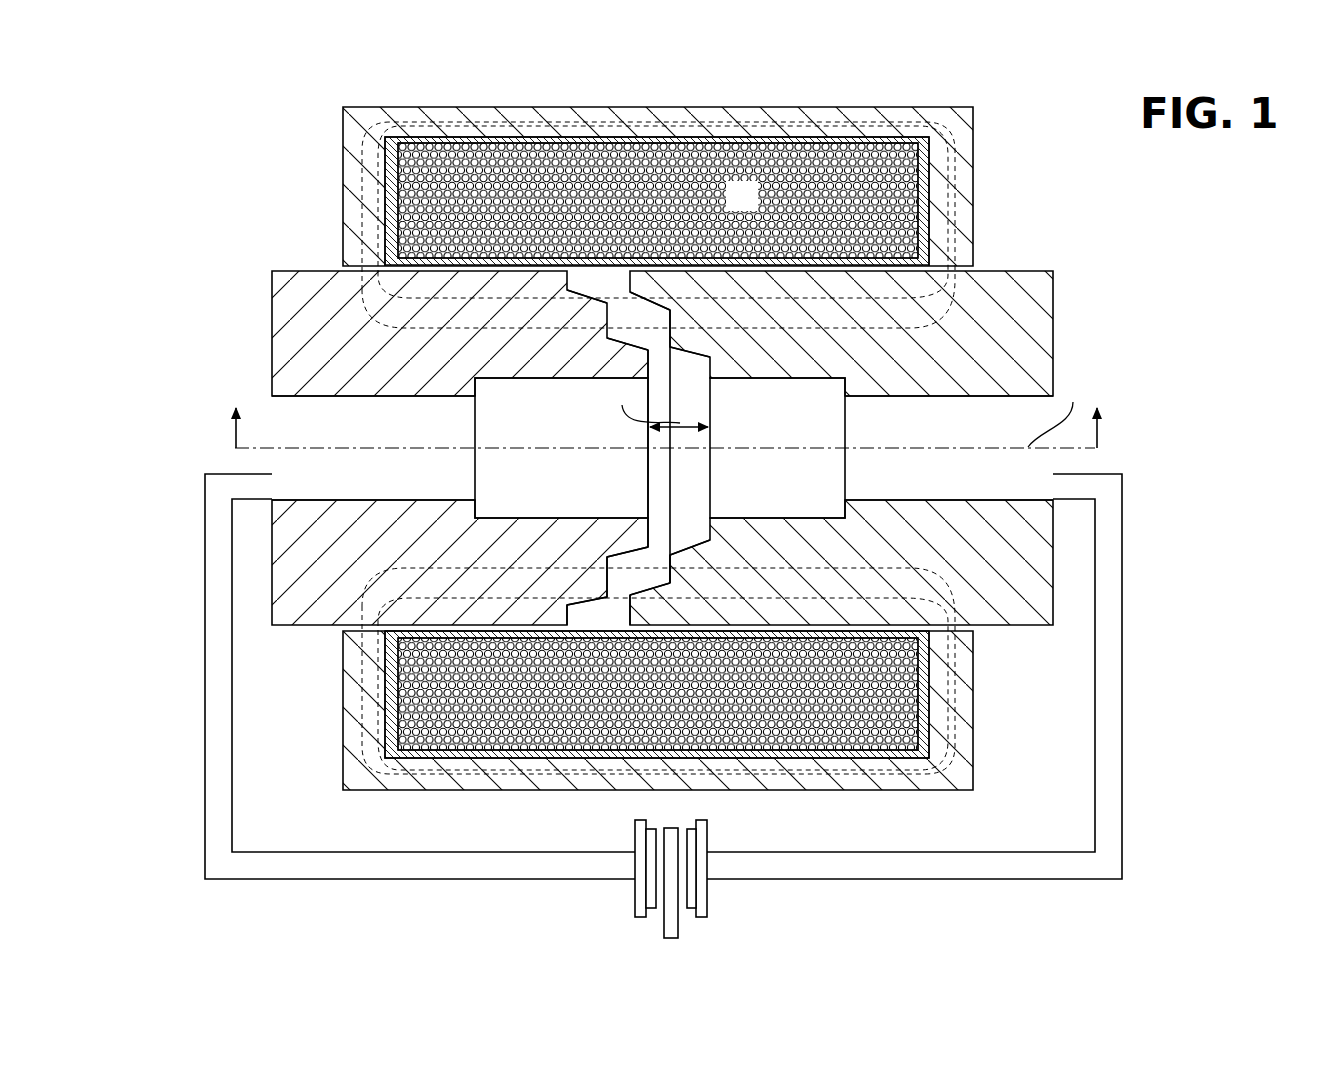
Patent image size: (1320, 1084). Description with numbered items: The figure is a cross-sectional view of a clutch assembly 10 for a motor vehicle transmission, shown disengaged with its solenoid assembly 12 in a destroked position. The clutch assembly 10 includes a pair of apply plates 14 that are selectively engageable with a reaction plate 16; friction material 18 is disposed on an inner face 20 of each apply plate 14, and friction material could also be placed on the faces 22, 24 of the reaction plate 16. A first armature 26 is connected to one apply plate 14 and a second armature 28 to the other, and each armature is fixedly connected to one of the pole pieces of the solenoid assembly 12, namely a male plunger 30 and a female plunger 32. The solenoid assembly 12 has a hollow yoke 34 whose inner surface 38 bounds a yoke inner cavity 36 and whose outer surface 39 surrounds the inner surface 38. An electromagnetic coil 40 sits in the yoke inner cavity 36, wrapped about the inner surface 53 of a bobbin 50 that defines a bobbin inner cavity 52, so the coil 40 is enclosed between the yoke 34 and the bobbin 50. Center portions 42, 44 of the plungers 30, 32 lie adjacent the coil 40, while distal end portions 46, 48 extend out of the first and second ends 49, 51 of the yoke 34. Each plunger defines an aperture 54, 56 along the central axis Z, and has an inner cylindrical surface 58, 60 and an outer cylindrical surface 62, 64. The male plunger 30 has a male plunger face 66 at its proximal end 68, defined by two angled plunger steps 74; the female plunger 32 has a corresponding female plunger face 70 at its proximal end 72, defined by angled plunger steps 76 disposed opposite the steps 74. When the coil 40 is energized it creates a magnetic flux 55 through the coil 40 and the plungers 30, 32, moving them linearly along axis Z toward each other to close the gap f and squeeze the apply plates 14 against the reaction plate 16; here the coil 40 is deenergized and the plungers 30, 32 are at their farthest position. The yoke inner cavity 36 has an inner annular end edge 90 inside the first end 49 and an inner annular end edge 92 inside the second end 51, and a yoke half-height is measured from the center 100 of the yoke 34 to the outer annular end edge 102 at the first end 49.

The clutch assembly 10 is at (243, 193).
The solenoid assembly 12 is at (698, 170).
The apply plates 14 is at (636, 840).
The reaction plate 16 is at (673, 873).
The friction material 18 is at (650, 897).
The inner face 20 is at (673, 867).
The face 22 is at (665, 880).
The face 24 is at (664, 880).
The first armature 26 is at (372, 873).
The second armature 28 is at (990, 873).
The male plunger 30 is at (270, 345).
The female plunger 32 is at (889, 333).
The yoke 34 is at (702, 170).
The yoke inner cavity 36 is at (850, 138).
The inner cylindrical or cubical surface 38 is at (642, 726).
The outer cylindrical or cubical surface 39 is at (648, 736).
The electromagnetic coil 40 is at (658, 456).
The center portion 42 is at (418, 303).
The center portion 44 is at (773, 365).
The distal end portion 46 is at (418, 303).
The distal end portion 48 is at (889, 296).
The first end 49 is at (670, 736).
The bobbin 50 is at (388, 165).
The second end 51 is at (700, 736).
The inner cavity 52 is at (658, 456).
The inner surface 53 is at (560, 257).
The aperture 54 is at (285, 405).
The magnetic flux 55 is at (850, 782).
The aperture 56 is at (993, 400).
The inner cylindrical surface 58 is at (393, 490).
The inner cylindrical surface 60 is at (880, 487).
The outer cylindrical surface 62 is at (418, 303).
The outer cylindrical surface 64 is at (889, 296).
The male plunger face 66 is at (608, 570).
The proximal end 68 is at (588, 618).
The female plunger face 70 is at (640, 537).
The proximal end 72 is at (640, 627).
The angled plunger steps 74 is at (640, 347).
The angled plunger steps 76 is at (685, 338).
The inner annular end edge 90 is at (642, 716).
The inner annular end edge 92 is at (925, 722).
The center 100 is at (658, 731).
The outer annular end edge 102 is at (642, 716).